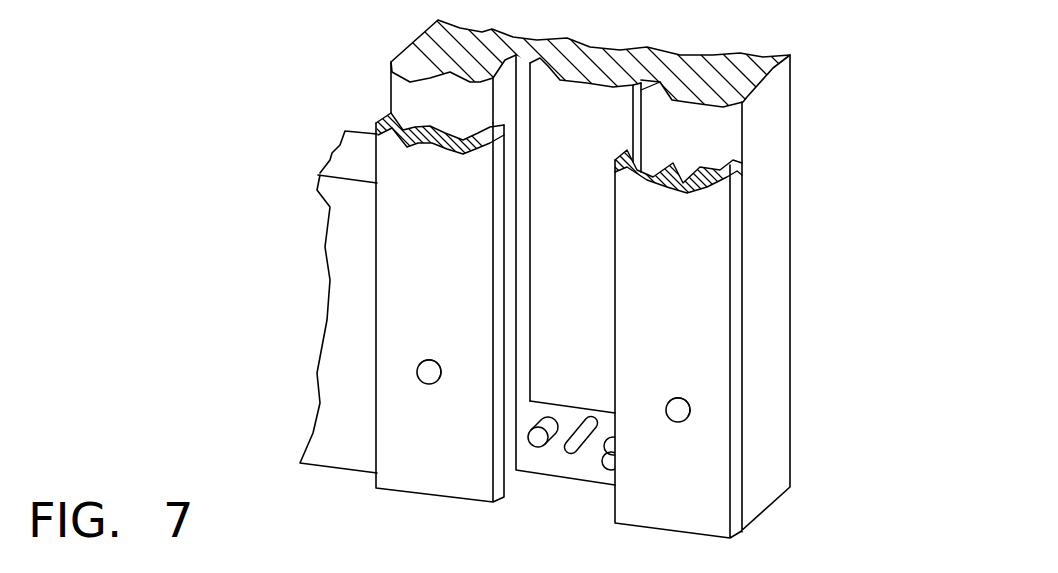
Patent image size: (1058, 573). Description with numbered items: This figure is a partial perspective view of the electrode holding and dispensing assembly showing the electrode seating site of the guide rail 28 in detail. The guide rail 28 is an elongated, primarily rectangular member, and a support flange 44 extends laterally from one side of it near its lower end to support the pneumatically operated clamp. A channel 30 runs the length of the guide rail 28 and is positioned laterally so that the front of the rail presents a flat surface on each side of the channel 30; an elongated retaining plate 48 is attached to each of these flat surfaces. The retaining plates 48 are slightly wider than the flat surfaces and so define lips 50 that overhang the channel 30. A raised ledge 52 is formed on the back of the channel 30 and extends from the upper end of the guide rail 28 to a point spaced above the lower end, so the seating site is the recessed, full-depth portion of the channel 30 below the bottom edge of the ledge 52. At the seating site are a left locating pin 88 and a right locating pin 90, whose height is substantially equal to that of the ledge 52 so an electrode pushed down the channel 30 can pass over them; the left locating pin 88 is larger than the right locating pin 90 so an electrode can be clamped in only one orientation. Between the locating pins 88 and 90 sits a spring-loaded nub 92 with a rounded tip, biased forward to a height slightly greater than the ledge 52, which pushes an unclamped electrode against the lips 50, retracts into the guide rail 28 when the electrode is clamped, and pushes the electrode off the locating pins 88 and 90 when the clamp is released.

The guide rail 28 is at (773, 243).
The channel 30 is at (525, 183).
The support flange 44 is at (347, 166).
The retaining plate 48 is at (700, 302).
The lip 50 is at (493, 240).
The raised ledge 52 is at (588, 272).
The left locating pin 88 is at (540, 431).
The right locating pin 90 is at (606, 469).
The spring-loaded nub 92 is at (571, 453).